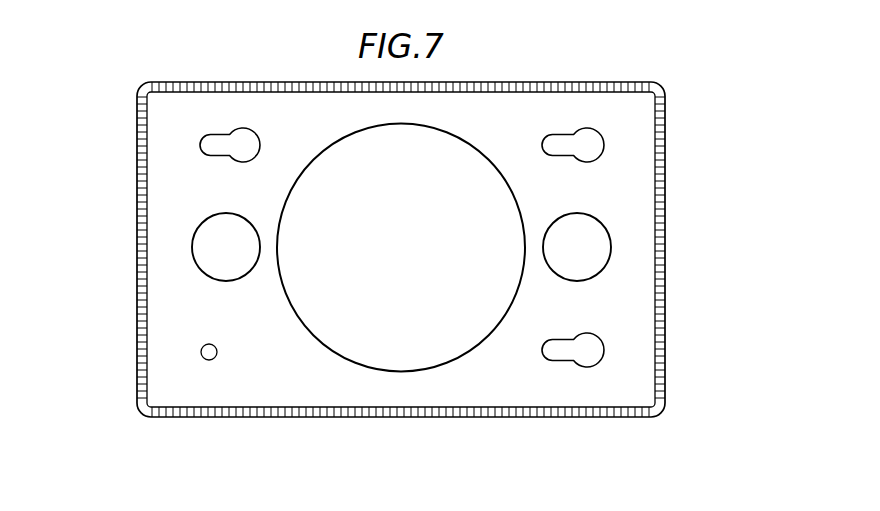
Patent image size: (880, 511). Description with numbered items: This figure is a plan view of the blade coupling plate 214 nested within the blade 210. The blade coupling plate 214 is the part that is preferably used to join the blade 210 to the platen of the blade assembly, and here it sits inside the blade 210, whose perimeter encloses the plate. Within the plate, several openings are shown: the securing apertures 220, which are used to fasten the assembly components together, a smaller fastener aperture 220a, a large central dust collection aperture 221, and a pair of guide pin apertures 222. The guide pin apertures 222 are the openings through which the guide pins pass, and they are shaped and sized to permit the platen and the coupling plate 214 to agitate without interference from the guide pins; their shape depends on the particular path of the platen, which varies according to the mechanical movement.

The blade 210 is at (377, 413).
The blade coupling plate 214 is at (298, 381).
The securing apertures 220 is at (200, 139).
The fastener aperture 220a is at (201, 350).
The dust collection aperture 221 is at (353, 133).
The guide pin apertures 222 is at (193, 247).